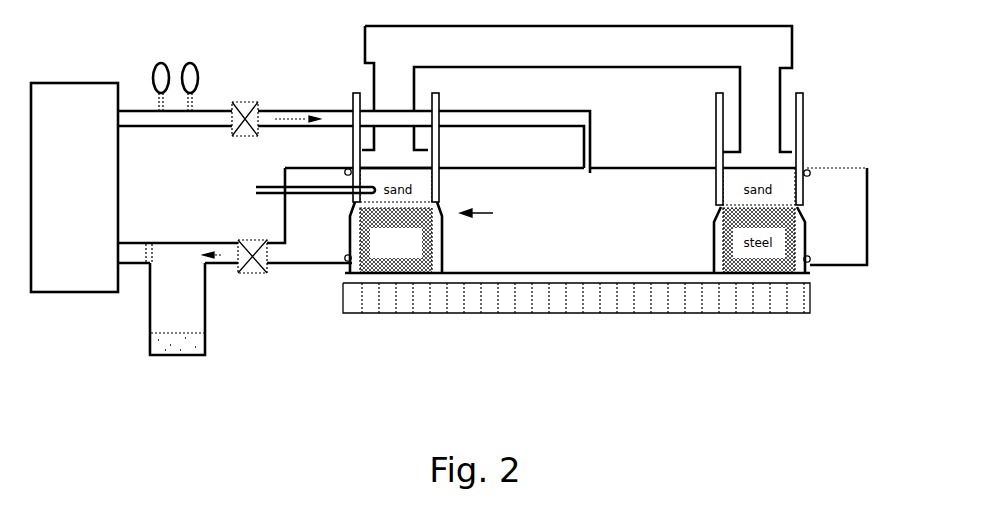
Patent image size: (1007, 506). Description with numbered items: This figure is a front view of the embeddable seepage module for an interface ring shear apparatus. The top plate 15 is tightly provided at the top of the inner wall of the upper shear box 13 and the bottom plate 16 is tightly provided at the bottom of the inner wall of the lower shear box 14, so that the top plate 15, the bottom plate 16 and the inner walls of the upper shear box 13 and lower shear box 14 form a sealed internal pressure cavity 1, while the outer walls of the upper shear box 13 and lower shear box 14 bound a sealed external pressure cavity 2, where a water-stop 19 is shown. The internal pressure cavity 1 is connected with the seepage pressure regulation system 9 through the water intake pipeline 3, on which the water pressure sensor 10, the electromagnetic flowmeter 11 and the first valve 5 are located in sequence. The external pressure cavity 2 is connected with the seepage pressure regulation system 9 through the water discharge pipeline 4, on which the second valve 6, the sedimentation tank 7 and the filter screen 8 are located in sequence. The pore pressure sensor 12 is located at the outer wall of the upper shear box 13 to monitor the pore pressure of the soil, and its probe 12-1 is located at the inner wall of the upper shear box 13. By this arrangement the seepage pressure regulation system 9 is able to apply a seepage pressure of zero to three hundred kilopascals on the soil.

The internal pressure cavity 1 is at (577, 152).
The external pressure cavity 2 is at (837, 216).
The water intake pipeline 3 is at (357, 127).
The water discharge pipeline 4 is at (282, 268).
The first valve 5 is at (245, 101).
The second valve 6 is at (252, 276).
The sedimentation tank 7 is at (177, 309).
The filter screen 8 is at (147, 237).
The seepage pressure regulation system 9 is at (74, 187).
The water pressure sensor 10 is at (192, 70).
The electromagnetic flowmeter 11 is at (160, 70).
The pore pressure sensor 12 is at (300, 193).
The probe 12-1 is at (358, 184).
The upper shear box 13 is at (440, 182).
The lower shear box 14 is at (440, 240).
The top plate 15 is at (660, 168).
The bottom plate 16 is at (660, 273).
The water-stop 19 is at (811, 174).